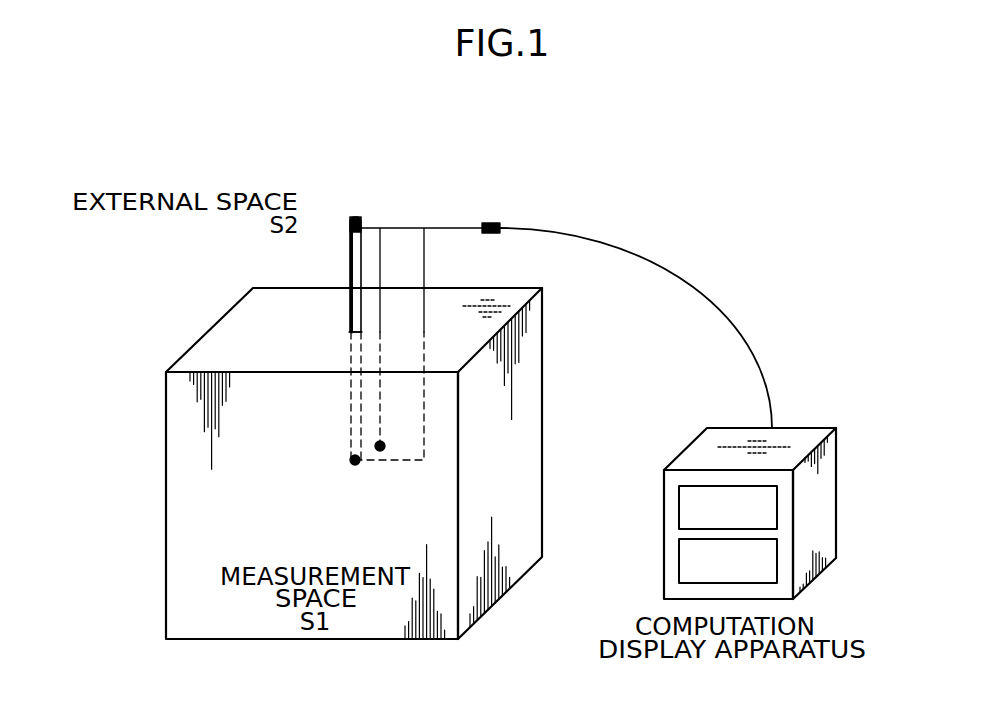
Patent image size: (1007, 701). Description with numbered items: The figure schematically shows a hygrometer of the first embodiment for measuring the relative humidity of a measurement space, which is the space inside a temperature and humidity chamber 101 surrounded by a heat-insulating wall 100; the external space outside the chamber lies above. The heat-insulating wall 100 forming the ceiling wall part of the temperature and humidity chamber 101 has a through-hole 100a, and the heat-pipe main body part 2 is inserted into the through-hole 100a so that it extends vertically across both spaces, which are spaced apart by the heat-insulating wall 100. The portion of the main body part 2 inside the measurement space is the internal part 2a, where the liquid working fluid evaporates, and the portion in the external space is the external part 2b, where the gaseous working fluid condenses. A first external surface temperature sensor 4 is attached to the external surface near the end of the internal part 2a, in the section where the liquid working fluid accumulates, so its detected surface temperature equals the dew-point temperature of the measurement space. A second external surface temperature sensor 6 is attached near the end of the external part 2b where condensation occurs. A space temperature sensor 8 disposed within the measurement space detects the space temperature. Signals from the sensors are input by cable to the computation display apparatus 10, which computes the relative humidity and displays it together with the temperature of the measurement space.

The main body part 2 is at (384, 348).
The internal part 2a is at (350, 412).
The external part 2b is at (325, 245).
The first external surface temperature sensor 4 is at (355, 466).
The second external surface temperature sensor 6 is at (355, 217).
The space temperature sensor 8 is at (381, 441).
The computation display apparatus 10 is at (845, 486).
The heat-insulating wall 100 is at (207, 348).
The through-hole 100a is at (352, 327).
The temperature and humidity chamber 101 is at (334, 463).